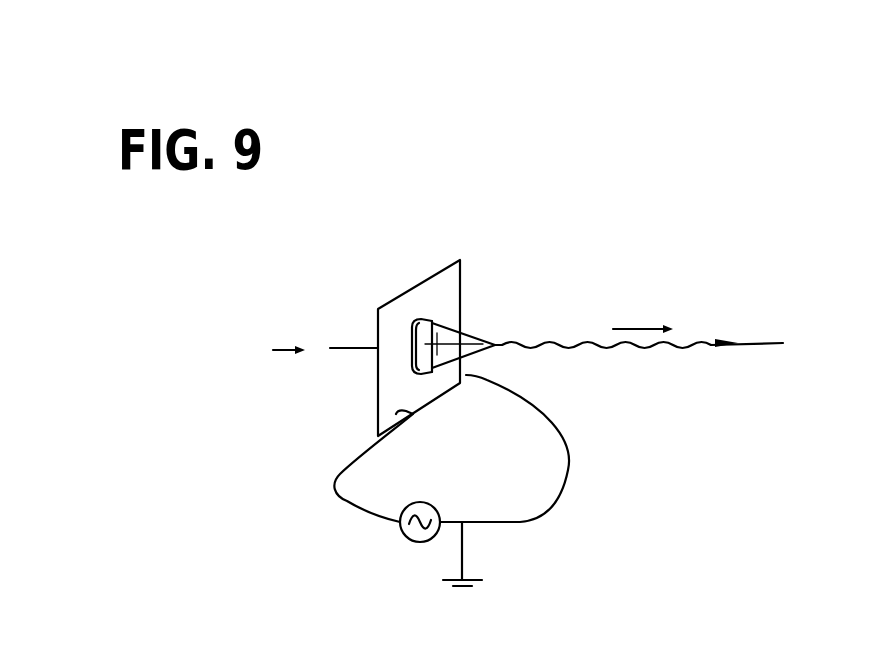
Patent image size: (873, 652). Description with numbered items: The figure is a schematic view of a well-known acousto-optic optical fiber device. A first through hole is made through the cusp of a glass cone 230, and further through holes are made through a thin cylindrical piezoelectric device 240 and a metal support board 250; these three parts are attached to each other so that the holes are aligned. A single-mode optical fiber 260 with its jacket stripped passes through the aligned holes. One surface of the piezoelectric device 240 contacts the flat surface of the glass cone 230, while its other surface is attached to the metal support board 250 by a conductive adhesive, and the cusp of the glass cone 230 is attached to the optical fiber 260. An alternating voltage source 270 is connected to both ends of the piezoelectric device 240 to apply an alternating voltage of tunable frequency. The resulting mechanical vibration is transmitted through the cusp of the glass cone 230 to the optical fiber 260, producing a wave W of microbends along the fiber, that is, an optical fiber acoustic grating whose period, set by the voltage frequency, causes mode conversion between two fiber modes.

The glass cone 230 is at (480, 331).
The piezoelectric device 240 is at (423, 320).
The metal support board 250 is at (378, 411).
The single-mode optical fiber 260 is at (352, 347).
The alternating voltage source 270 is at (342, 512).
The wave of microbends W is at (713, 352).